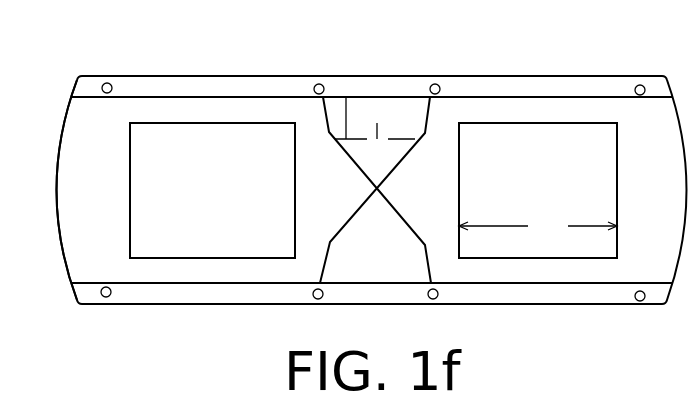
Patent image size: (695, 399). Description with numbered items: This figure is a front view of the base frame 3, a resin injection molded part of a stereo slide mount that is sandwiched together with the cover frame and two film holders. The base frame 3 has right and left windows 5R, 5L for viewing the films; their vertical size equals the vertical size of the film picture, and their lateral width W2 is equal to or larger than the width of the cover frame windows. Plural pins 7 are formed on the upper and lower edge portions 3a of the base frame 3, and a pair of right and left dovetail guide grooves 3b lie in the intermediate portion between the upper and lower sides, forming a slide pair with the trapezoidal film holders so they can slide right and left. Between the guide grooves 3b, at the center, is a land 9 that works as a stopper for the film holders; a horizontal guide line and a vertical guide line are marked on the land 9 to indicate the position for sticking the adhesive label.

The base frame 3 is at (198, 66).
The upper and lower edge portions 3a is at (147, 90).
The dovetail guide grooves 3b is at (75, 157).
The left window 5L is at (246, 129).
The right window 5R is at (567, 131).
The pins 7 is at (106, 83).
The land 9 is at (400, 128).
The lateral width of the windows of the base frame W2 is at (538, 227).